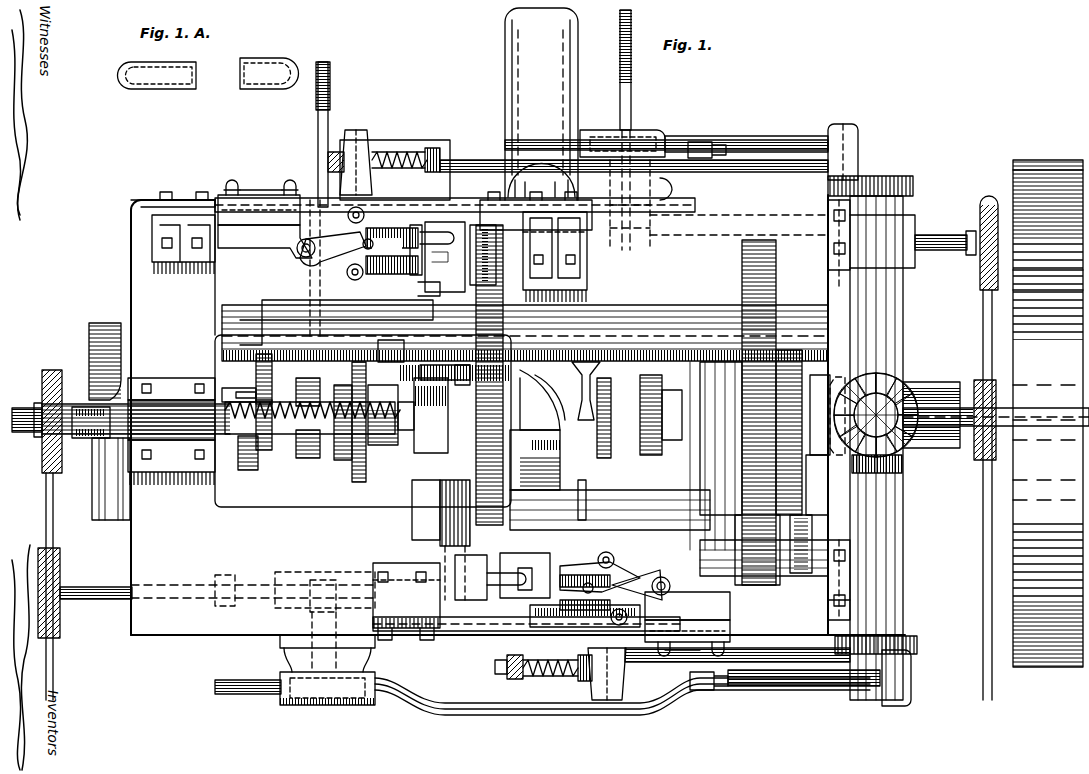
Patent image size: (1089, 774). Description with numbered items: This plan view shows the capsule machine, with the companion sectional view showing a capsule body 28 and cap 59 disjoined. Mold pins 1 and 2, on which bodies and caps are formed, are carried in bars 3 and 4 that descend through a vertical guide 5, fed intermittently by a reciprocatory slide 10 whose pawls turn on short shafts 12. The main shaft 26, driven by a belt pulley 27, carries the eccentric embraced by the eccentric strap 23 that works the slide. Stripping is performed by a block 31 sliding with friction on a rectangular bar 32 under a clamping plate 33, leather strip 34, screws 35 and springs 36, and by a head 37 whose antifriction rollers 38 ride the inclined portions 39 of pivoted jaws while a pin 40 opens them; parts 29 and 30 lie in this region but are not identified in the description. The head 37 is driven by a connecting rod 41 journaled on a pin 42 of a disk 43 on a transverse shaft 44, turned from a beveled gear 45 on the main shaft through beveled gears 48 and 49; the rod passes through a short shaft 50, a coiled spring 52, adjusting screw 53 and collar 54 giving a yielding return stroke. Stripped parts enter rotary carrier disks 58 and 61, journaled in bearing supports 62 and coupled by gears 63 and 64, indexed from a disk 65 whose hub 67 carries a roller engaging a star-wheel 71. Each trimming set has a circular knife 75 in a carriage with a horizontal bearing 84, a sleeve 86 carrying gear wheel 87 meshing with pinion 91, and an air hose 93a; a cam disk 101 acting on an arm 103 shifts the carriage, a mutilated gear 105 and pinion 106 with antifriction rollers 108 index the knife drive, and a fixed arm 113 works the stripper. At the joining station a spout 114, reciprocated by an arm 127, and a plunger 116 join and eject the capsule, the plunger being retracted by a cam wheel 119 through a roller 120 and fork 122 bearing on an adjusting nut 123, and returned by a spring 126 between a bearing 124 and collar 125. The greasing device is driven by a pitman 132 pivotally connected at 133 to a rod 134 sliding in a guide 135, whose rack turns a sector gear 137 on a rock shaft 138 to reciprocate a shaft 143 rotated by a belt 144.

In FIG. 1, the mold pins 1 is at (503, 573).
In FIG. 1, the mold pins 2 is at (450, 236).
In FIG. 1, the bar 3 is at (522, 590).
In FIG. 1, the bar 4 is at (410, 250).
In FIG. 1, the vertical guide 5 is at (424, 292).
In FIG. 1, the reciprocatory slide 10 is at (470, 278).
In FIG. 1, the short shafts 12 is at (498, 565).
In FIG. 1, the eccentric strap 23 is at (652, 365).
In FIG. 1, the main shaft 26 is at (1005, 417).
In FIG. 1, the belt pulley 27 is at (1048, 413).
In FIG. 1A, the bodies 28 is at (157, 75).
In FIG. 1, the friction block 29 is at (488, 415).
In FIG. 1, the pivot 30 is at (296, 249).
In FIG. 1, the block 31 is at (477, 422).
In FIG. 1, the rectangular bar 32 is at (468, 195).
In FIG. 1, the clamping plate 33 is at (474, 418).
In FIG. 1, the strip of leather 34 is at (600, 578).
In FIG. 1, the screws 35 is at (473, 407).
In FIG. 1, the springs 36 is at (471, 411).
In FIG. 1, the head 37 is at (470, 395).
In FIG. 1, the antifriction rollers 38 is at (607, 552).
In FIG. 1, the inclined portions 39 is at (637, 582).
In FIG. 1, the pin 40 is at (478, 416).
In FIG. 1, the connecting rod 41 is at (728, 172).
In FIG. 1, the pin 42 is at (845, 130).
In FIG. 1, the disk 43 is at (900, 176).
In FIG. 1, the transverse shaft 44 is at (852, 310).
In FIG. 1, the beveled gear 45 is at (840, 377).
In FIG. 1, the beveled gear 48 is at (905, 385).
In FIG. 1, the beveled gear 49 is at (902, 466).
In FIG. 1, the short shaft 50 is at (357, 132).
In FIG. 1, the coiled spring 52 is at (398, 152).
In FIG. 1, the adjusting screw 53 is at (330, 160).
In FIG. 1, the collar 54 is at (434, 150).
In FIG. 1, the rotary carrier disk 58 is at (440, 538).
In FIG. 1A, the caps 59 is at (269, 73).
In FIG. 1, the rotary carrier disk 61 is at (504, 296).
In FIG. 1, the bearing supports 62 is at (672, 310).
In FIG. 1, the gear wheel 63 is at (768, 582).
In FIG. 1, the gear 64 is at (776, 278).
In FIG. 1, the disk 65 is at (790, 352).
In FIG. 1, the hub 67 is at (812, 482).
In FIG. 1, the star-wheel 71 is at (812, 544).
In FIG. 1, the circular knife 75 is at (450, 466).
In FIG. 1, the horizontal bearing 84 is at (550, 492).
In FIG. 1, the sleeve 86 is at (535, 449).
In FIG. 1, the gear wheel 87 is at (355, 482).
In FIG. 1, the pinion 91 is at (350, 335).
In FIG. 1, the air hose 93a is at (328, 88).
In FIG. 1, the cam disk 101 is at (384, 448).
In FIG. 1, the arm 103 is at (586, 394).
In FIG. 1, the mutilated gear 105 is at (264, 354).
In FIG. 1, the pinion 106 is at (296, 390).
In FIG. 1, the antifriction rollers 108 is at (238, 392).
In FIG. 1, the fixed arm 113 is at (385, 352).
In FIG. 1, the spout 114 is at (493, 376).
In FIG. 1, the reciprocatory plunger 116 is at (130, 400).
In FIG. 1, the cam wheel 119 is at (106, 318).
In FIG. 1, the antifriction roller 120 is at (124, 522).
In FIG. 1, the fork 122 is at (76, 407).
In FIG. 1, the adjusting nut 123 is at (36, 432).
In FIG. 1, the bearing 124 is at (172, 425).
In FIG. 1, the collar 125 is at (406, 432).
In FIG. 1, the compressible spring 126 is at (336, 460).
In FIG. 1, the arm 127 is at (542, 400).
In FIG. 1, the pitman 132 is at (785, 135).
In FIG. 1, the pivotal connection 133 is at (710, 140).
In FIG. 1, the reciprocatory rod 134 is at (622, 708).
In FIG. 1, the guide 135 is at (652, 130).
In FIG. 1, the sector gear 137 is at (282, 700).
In FIG. 1, the transverse rock shaft 138 is at (288, 655).
In FIG. 1, the shaft 143 is at (107, 605).
In FIG. 1, the belt 144 is at (46, 522).